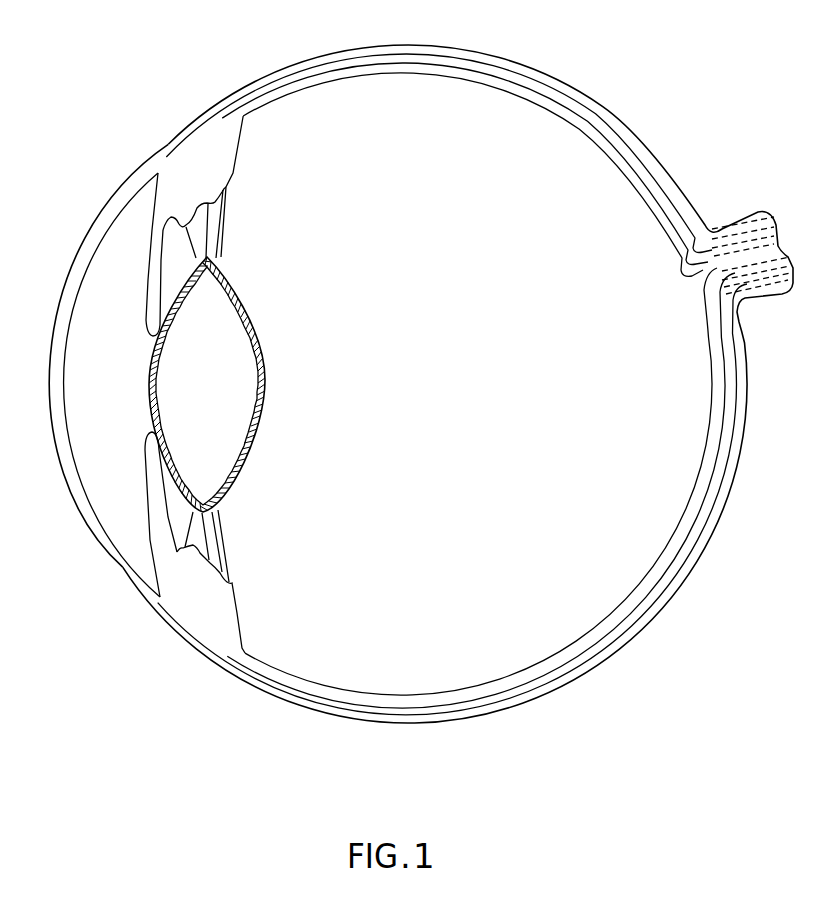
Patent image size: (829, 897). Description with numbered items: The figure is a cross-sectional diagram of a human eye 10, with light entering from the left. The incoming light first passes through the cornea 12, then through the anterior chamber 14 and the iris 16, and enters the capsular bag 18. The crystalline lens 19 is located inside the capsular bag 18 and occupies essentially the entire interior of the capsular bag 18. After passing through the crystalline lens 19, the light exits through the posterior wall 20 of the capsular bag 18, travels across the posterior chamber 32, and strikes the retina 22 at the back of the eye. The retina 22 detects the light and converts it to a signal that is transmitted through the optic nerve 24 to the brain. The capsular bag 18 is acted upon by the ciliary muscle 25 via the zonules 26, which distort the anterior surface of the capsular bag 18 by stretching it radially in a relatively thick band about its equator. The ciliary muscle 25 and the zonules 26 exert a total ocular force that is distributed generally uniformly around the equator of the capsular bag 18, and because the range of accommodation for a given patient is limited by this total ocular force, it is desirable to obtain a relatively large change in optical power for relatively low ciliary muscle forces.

The human eye 10 is at (117, 96).
The cornea 12 is at (60, 296).
The anterior chamber 14 is at (98, 248).
The iris 16 is at (147, 299).
The capsular bag 18 is at (264, 381).
The crystalline lens 19 is at (189, 388).
The posterior wall 20 is at (241, 291).
The retina 22 is at (566, 110).
The optic nerve 24 is at (741, 230).
The ciliary muscle 25 is at (243, 623).
The zonules 26 is at (226, 213).
The posterior chamber 32 is at (511, 100).